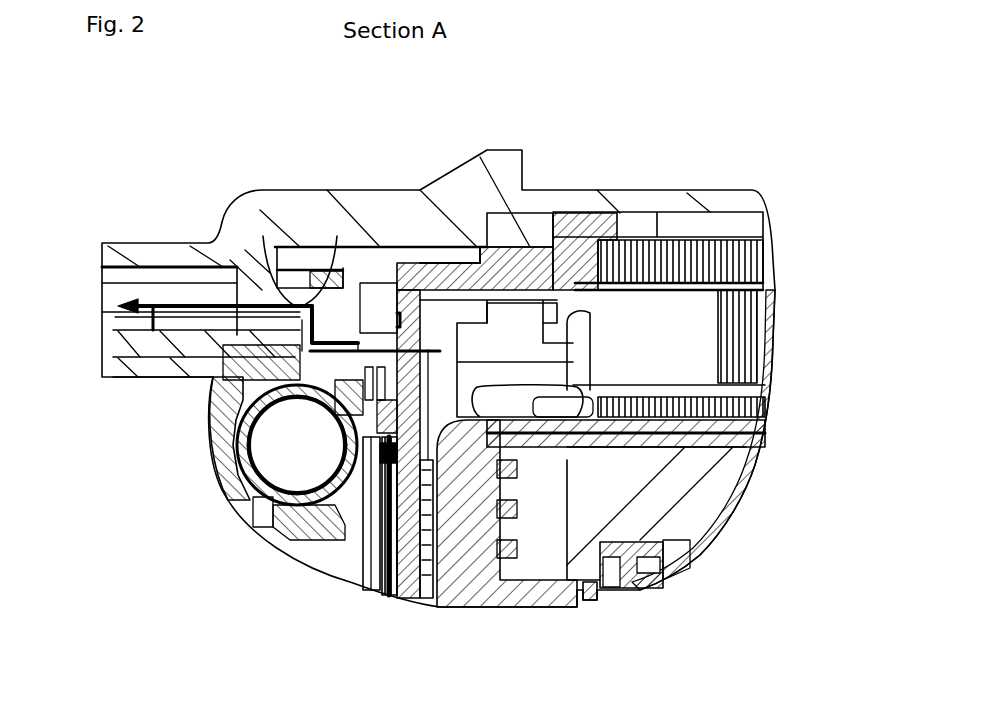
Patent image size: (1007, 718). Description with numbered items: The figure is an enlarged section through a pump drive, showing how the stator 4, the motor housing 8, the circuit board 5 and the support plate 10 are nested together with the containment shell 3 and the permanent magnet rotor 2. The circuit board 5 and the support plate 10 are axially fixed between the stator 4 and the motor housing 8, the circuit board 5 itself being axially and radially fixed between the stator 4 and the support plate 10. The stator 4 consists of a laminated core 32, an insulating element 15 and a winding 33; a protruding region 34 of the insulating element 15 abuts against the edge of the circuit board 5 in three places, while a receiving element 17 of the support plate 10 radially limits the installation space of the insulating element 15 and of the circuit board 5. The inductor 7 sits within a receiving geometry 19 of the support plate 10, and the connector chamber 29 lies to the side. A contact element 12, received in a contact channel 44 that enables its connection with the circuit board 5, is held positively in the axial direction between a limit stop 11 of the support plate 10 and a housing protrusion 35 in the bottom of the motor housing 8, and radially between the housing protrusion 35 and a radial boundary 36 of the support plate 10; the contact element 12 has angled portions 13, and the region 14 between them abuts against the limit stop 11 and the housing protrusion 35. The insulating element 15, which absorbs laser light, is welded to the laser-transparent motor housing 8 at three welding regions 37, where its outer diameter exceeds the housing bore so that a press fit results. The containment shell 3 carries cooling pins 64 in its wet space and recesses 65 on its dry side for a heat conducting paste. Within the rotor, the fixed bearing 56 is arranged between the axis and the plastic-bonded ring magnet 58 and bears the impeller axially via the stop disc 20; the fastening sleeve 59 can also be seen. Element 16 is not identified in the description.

The permanent magnet rotor 2 is at (562, 542).
The containment shell 3 is at (713, 423).
The stator 4 is at (690, 222).
The circuit board 5 is at (413, 550).
The inductor 7 is at (297, 445).
The motor housing 8 is at (740, 200).
The support plate 10 is at (350, 553).
The limit stop 11 is at (273, 293).
The contact element 12 is at (197, 313).
The angled portions 13 is at (337, 287).
The region 14 is at (300, 341).
The insulating element 15 is at (532, 226).
The valve stem 16 is at (387, 270).
The receiving element 17 is at (443, 258).
The receiving geometry 19 is at (323, 373).
The stop disc 20 is at (593, 597).
The connector chamber 29 is at (132, 250).
The laminated core 32 is at (743, 263).
The winding 33 is at (603, 350).
The protruding region 34 is at (460, 273).
The housing protrusion 35 is at (295, 325).
The radial boundary 36 is at (297, 297).
The welding region 37 is at (583, 212).
The contact channel 44 is at (323, 510).
The fixed bearing 56 is at (640, 570).
The ring magnet 58 is at (713, 497).
The fastening sleeve 59 is at (503, 593).
The cooling pins 64 is at (510, 530).
The recesses 65 is at (447, 530).